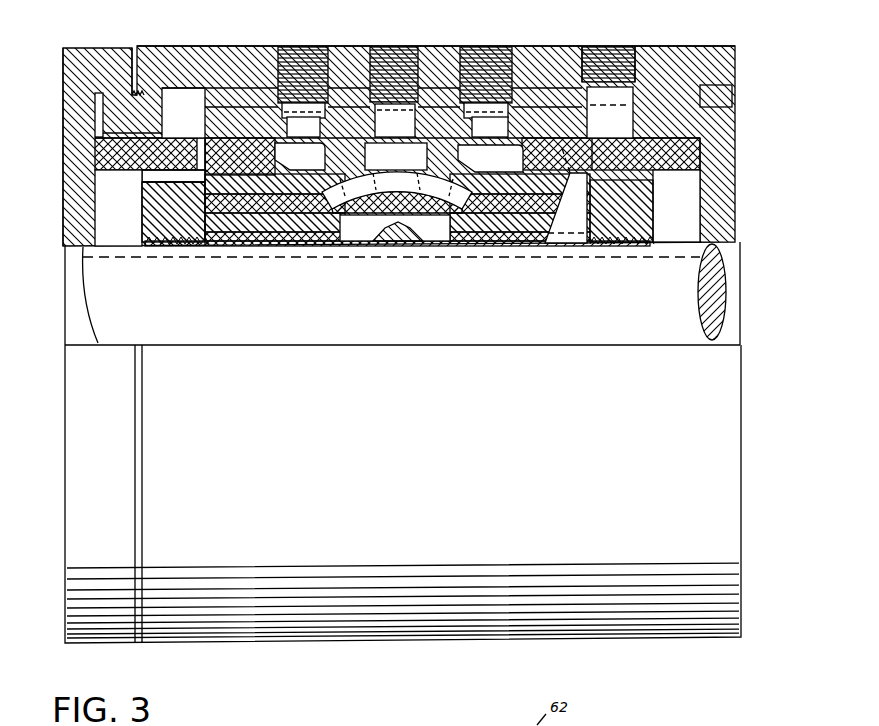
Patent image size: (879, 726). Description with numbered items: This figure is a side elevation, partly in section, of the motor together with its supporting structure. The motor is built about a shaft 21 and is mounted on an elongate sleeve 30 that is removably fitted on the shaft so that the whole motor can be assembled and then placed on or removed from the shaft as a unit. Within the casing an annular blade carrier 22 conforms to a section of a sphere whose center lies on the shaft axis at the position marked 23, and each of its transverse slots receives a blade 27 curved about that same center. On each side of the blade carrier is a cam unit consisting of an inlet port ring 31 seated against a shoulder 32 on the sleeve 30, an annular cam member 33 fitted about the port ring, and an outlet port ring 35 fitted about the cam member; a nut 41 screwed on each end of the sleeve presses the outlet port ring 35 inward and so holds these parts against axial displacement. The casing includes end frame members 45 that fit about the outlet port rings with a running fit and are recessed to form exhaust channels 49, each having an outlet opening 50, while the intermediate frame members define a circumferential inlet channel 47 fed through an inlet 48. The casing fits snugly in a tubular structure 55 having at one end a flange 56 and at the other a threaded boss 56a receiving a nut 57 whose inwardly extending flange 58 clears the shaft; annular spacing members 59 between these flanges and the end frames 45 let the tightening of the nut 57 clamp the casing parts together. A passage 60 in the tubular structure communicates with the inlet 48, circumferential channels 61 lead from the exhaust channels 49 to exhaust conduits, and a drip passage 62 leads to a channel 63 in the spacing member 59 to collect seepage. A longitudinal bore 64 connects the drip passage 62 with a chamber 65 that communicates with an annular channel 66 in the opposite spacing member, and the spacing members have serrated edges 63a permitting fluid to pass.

The shaft 21 is at (675, 278).
The blade carrier 22 is at (400, 248).
The center of sphere 23 is at (400, 345).
The blade 27 is at (366, 247).
The sleeve 30 is at (207, 247).
The inlet port ring 31 is at (290, 247).
The shoulder 32 is at (335, 247).
The cam member 33 is at (250, 247).
The outlet port ring 35 is at (222, 247).
The nut 41 is at (152, 247).
The end frame member 45 is at (212, 157).
The inlet channel 47 is at (380, 153).
The inlet 48 is at (396, 156).
The exhaust channel 49 is at (308, 155).
The outlet opening 50 is at (399, 157).
The tubular structure 55 is at (240, 47).
The flange 56 is at (725, 188).
The threaded boss 56a is at (117, 115).
The nut 57 is at (92, 47).
The inwardly extending flange 58 is at (70, 183).
The spacing member 59 is at (138, 172).
The passage 60 is at (395, 120).
The circumferential channel 61 is at (295, 118).
The drip passage 62 is at (597, 117).
The channel 63 is at (620, 138).
The serrated edge 63a is at (610, 112).
The longitudinal bore 64 is at (220, 98).
The chamber 65 is at (173, 92).
The annular channel 66 is at (100, 128).